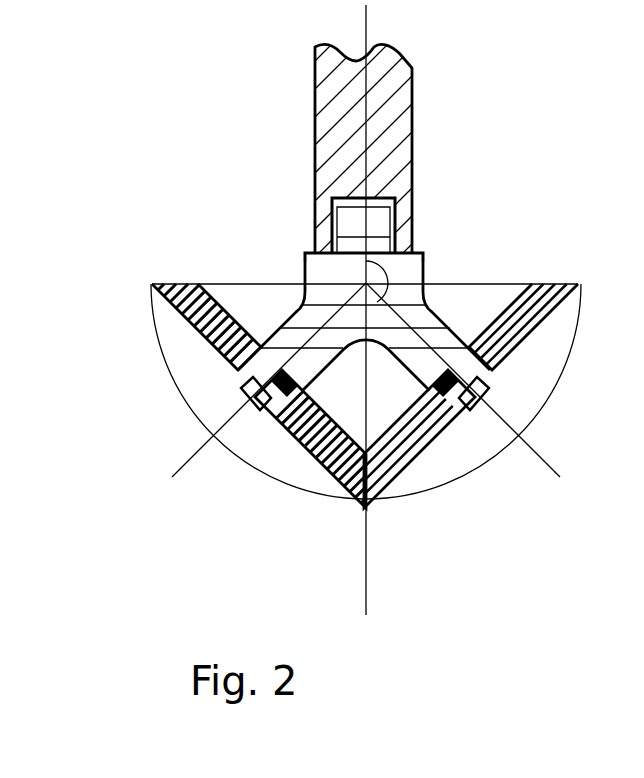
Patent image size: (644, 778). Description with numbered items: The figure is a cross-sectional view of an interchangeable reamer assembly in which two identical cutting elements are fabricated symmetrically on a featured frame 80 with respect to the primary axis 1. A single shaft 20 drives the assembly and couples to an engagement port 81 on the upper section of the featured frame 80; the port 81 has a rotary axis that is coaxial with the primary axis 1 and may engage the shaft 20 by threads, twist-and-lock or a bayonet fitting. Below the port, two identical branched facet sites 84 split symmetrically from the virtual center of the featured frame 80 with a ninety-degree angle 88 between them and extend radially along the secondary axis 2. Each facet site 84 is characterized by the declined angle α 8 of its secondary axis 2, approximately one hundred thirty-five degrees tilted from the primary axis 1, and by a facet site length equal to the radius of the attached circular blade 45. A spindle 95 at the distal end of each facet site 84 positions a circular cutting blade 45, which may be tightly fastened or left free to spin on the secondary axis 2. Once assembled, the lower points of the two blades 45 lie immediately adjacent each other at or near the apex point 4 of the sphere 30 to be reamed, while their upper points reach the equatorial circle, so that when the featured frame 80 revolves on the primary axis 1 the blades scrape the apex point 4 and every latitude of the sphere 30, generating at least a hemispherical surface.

The primary axis 1 is at (366, 25).
The shaft 20 is at (332, 163).
The engagement port 81 is at (350, 218).
The declined angle α 8 is at (413, 243).
The featured frame 80 is at (307, 252).
The branched facet site 84 is at (428, 335).
The circular blade 45 is at (532, 308).
The spindle 95 is at (260, 382).
The 90-degree angle 88 is at (292, 438).
The secondary axis 2 is at (540, 458).
The apex point 4 is at (368, 508).
The sphere 30 is at (437, 488).